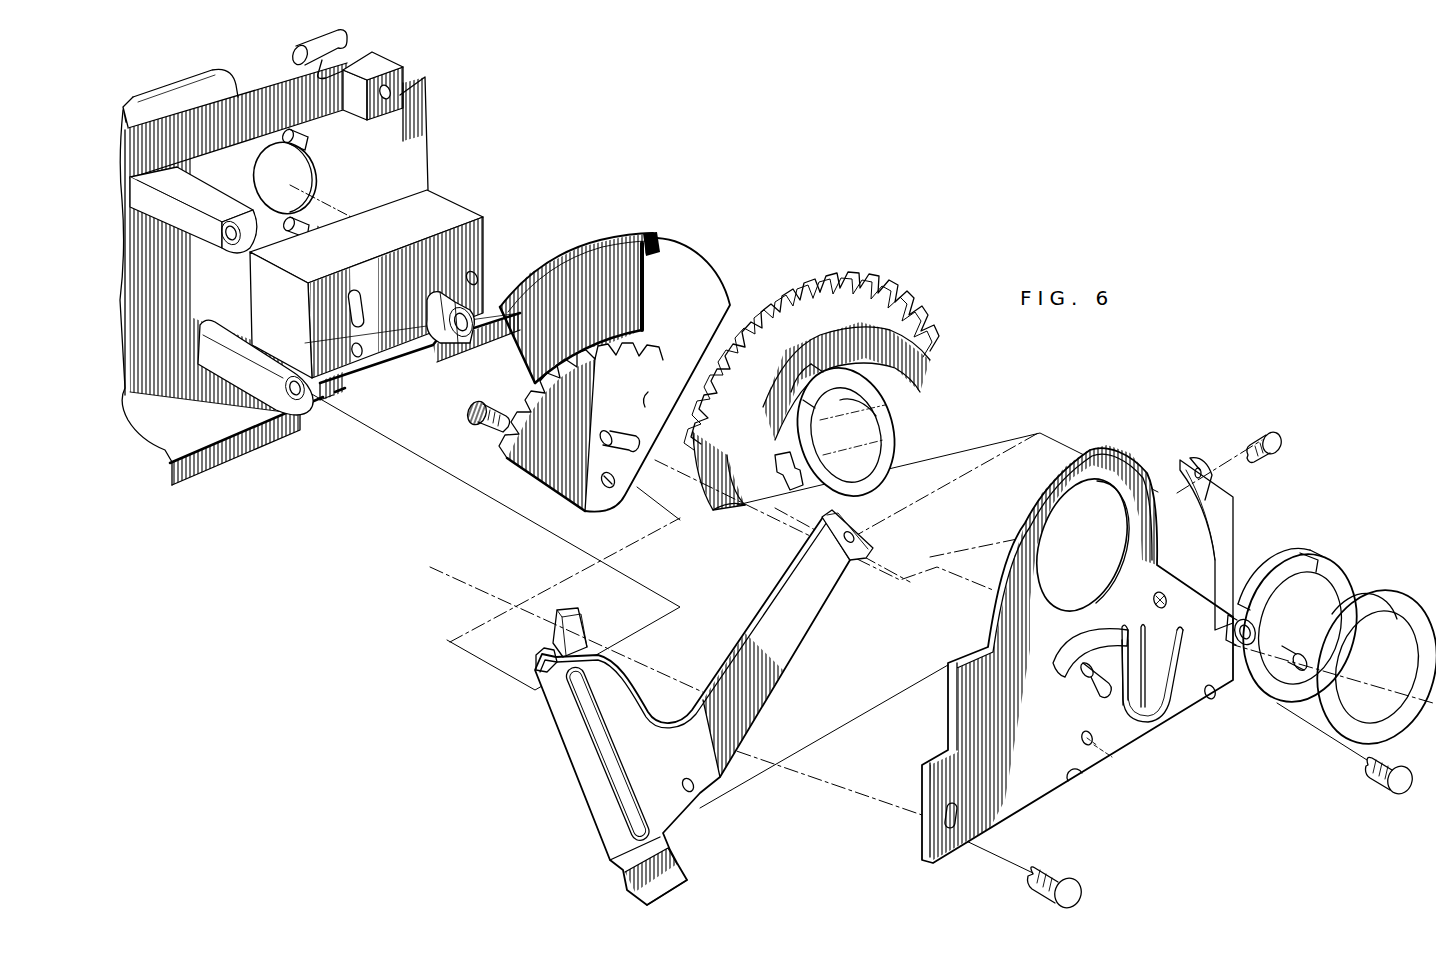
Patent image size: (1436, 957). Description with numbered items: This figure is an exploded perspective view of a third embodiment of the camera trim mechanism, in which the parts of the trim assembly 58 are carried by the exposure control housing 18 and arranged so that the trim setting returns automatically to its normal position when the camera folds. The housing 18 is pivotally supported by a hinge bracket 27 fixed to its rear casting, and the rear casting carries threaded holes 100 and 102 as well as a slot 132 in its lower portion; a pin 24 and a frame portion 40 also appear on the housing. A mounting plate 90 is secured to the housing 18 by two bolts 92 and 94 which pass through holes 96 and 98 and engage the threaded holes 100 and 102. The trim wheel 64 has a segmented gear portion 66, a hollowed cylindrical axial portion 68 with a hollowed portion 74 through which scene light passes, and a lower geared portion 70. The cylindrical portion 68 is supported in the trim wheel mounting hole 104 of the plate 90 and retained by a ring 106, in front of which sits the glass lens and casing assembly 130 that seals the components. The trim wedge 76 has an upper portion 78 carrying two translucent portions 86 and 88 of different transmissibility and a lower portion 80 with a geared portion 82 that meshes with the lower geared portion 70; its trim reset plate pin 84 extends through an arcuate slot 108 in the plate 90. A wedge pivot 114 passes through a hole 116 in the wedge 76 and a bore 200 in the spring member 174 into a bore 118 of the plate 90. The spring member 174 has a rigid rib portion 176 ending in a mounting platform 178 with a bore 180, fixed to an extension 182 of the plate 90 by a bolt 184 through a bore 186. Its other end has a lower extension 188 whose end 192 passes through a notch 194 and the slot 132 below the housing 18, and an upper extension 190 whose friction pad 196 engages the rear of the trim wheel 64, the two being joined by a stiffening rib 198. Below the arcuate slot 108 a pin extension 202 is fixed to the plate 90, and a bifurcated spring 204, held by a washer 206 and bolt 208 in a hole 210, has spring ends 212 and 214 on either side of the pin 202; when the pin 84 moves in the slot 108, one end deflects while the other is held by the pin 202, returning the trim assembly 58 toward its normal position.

The exposure control housing 18 is at (440, 95).
The pin 24 is at (318, 44).
The hinge bracket 27 is at (126, 105).
The frame plate 40 is at (410, 132).
The trim assembly 58 is at (811, 366).
The trim wheel 64 is at (785, 285).
The segmented gear portion 66 is at (902, 288).
The hollowed cylindrical axial portion 68 is at (848, 458).
The lower geared portion 70 is at (795, 485).
The hollowed portion 74 is at (870, 432).
The trim wedge 76 is at (628, 368).
The upper portion 78 is at (715, 310).
The lower portion 80 is at (645, 407).
The geared portion 82 is at (585, 368).
The trim reset plate pin 84 is at (604, 436).
The translucent portion 86 is at (710, 256).
The translucent portion 88 is at (590, 250).
The mounting plate 90 is at (1098, 661).
The bolt 92 is at (1050, 875).
The bolt 94 is at (1385, 783).
The hole 96 is at (950, 832).
The hole 98 is at (1212, 700).
The threaded hole 100 is at (298, 395).
The threaded hole 102 is at (462, 305).
The trim wheel mounting hole 104 is at (1095, 468).
The ring 106 is at (1335, 575).
The arcuate slot 108 is at (1080, 653).
The wedge pivot 114 is at (478, 426).
The hole 116 is at (608, 487).
The bore 118 is at (1081, 737).
The glass lens and casing assembly 130 is at (1425, 600).
The slot 132 is at (350, 383).
The spring member 174 is at (706, 707).
The rib portion 176 is at (780, 635).
The mounting platform 178 is at (868, 552).
The bore 180 is at (875, 540).
The extension 182 is at (1218, 528).
The bolt 184 is at (1270, 455).
The bore 186 is at (1203, 458).
The lower extension 188 is at (677, 857).
The upper extension 190 is at (542, 648).
The end 192 is at (672, 896).
The notch 194 is at (1055, 780).
The friction pad 196 is at (590, 630).
The stiffening rib 198 is at (598, 730).
The bore 200 is at (680, 790).
The pin extension 202 is at (1098, 690).
The bifurcated spring 204 is at (1180, 700).
The washer 206 is at (1247, 618).
The bolt 208 is at (1295, 672).
The hole 210 is at (1161, 590).
The spring end 212 is at (1121, 627).
The spring end 214 is at (1142, 627).